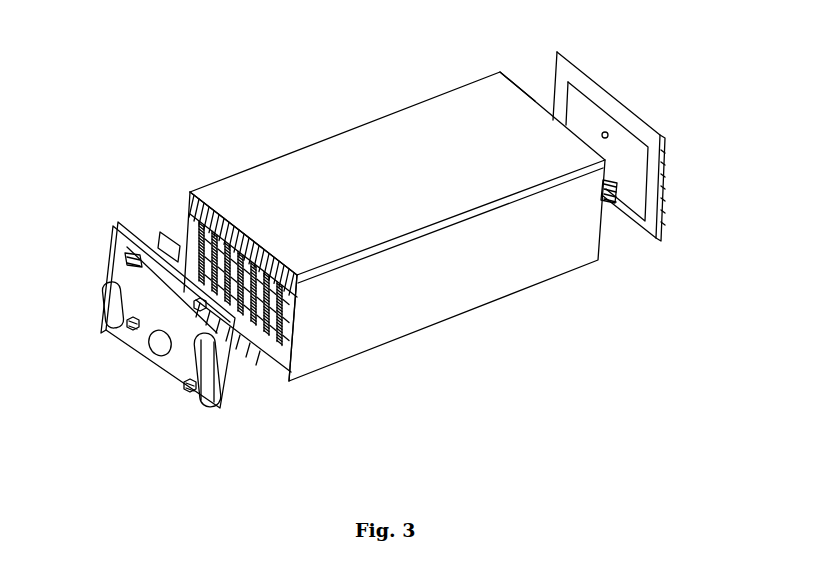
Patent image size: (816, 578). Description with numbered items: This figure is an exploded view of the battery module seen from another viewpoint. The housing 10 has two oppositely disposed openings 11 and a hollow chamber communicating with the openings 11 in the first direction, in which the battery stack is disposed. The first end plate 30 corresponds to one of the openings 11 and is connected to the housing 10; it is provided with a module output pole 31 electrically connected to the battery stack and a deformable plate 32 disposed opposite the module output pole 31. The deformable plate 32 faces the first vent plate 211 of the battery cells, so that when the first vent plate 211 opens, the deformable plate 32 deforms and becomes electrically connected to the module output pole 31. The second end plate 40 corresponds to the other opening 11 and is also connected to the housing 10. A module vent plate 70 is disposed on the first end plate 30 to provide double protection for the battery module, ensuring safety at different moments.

The housing 10 is at (430, 300).
The opening 11 is at (182, 206).
The first vent plate 211 is at (277, 340).
The first end plate 30 is at (117, 228).
The module output pole 31 is at (103, 301).
The deformable plate 32 is at (128, 328).
The second end plate 40 is at (627, 110).
The module vent plate 70 is at (151, 357).